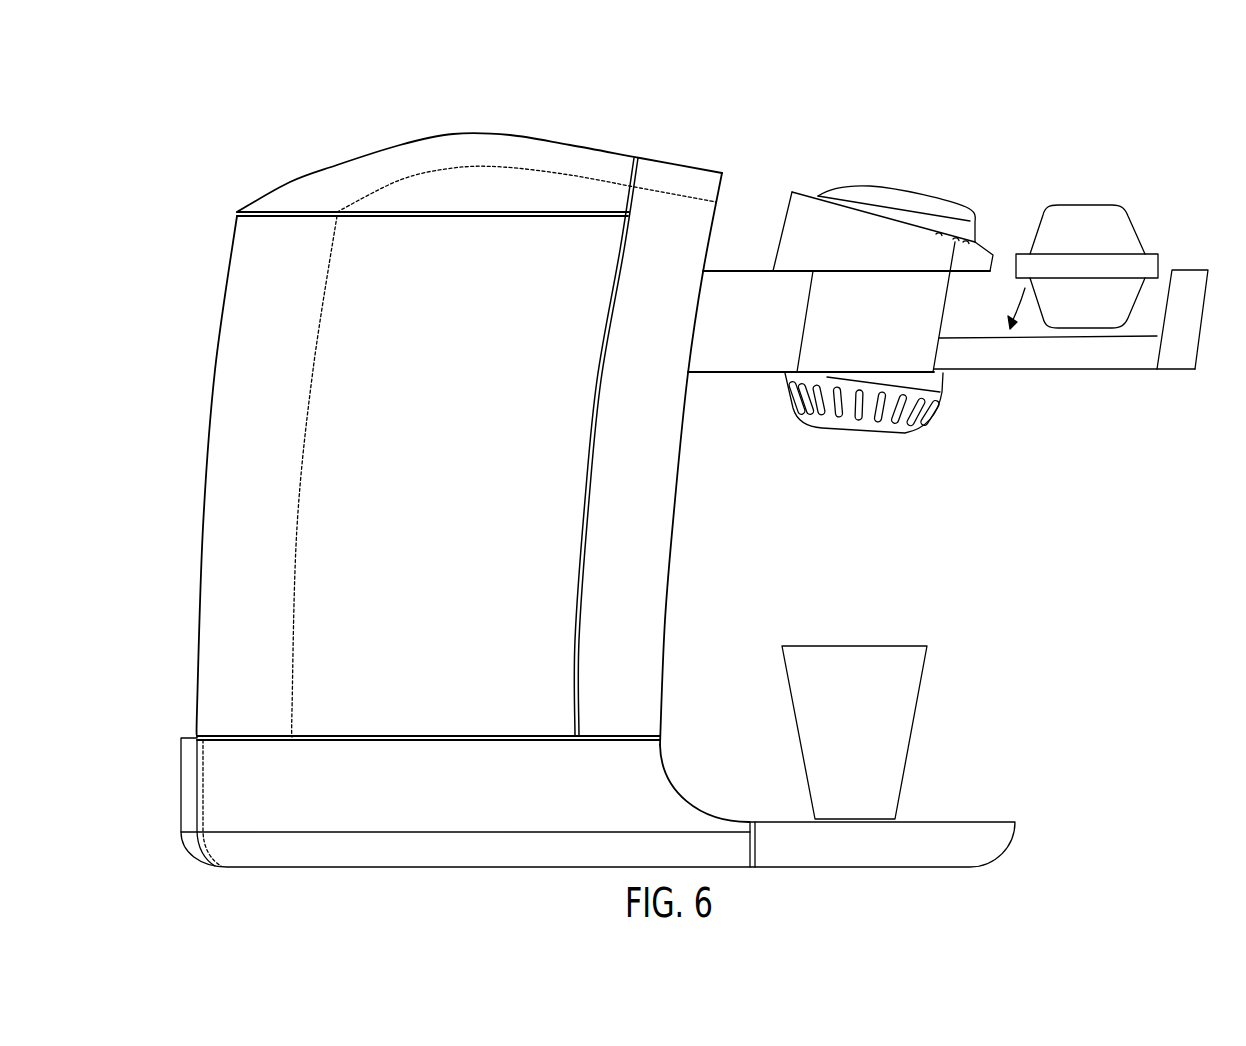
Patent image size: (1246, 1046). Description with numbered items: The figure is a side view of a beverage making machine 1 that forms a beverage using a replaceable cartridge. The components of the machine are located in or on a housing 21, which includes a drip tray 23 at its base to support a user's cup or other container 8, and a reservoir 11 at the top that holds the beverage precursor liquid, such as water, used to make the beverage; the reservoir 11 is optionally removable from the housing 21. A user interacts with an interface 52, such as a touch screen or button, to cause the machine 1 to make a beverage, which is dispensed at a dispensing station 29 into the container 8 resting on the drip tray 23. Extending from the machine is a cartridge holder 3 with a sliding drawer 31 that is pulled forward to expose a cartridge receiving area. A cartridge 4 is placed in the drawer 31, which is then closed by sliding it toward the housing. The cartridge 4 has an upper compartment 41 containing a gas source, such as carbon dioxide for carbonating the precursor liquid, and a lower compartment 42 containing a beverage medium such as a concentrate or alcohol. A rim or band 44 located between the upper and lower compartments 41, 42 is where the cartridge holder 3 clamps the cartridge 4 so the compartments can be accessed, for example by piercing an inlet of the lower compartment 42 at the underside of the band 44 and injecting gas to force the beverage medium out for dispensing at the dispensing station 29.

The beverage making machine 1 is at (184, 214).
The reservoir 11 is at (507, 145).
The interface 52 is at (676, 173).
The housing 21 is at (335, 550).
The cartridge holder 3 is at (994, 230).
The dispensing station 29 is at (903, 432).
The sliding drawer 31 is at (1025, 358).
The cartridge 4 is at (1163, 168).
The upper compartment 41 is at (1104, 212).
The rim or band 44 is at (1152, 267).
The lower compartment 42 is at (1087, 310).
The container 8 is at (902, 723).
The drip tray 23 is at (958, 825).